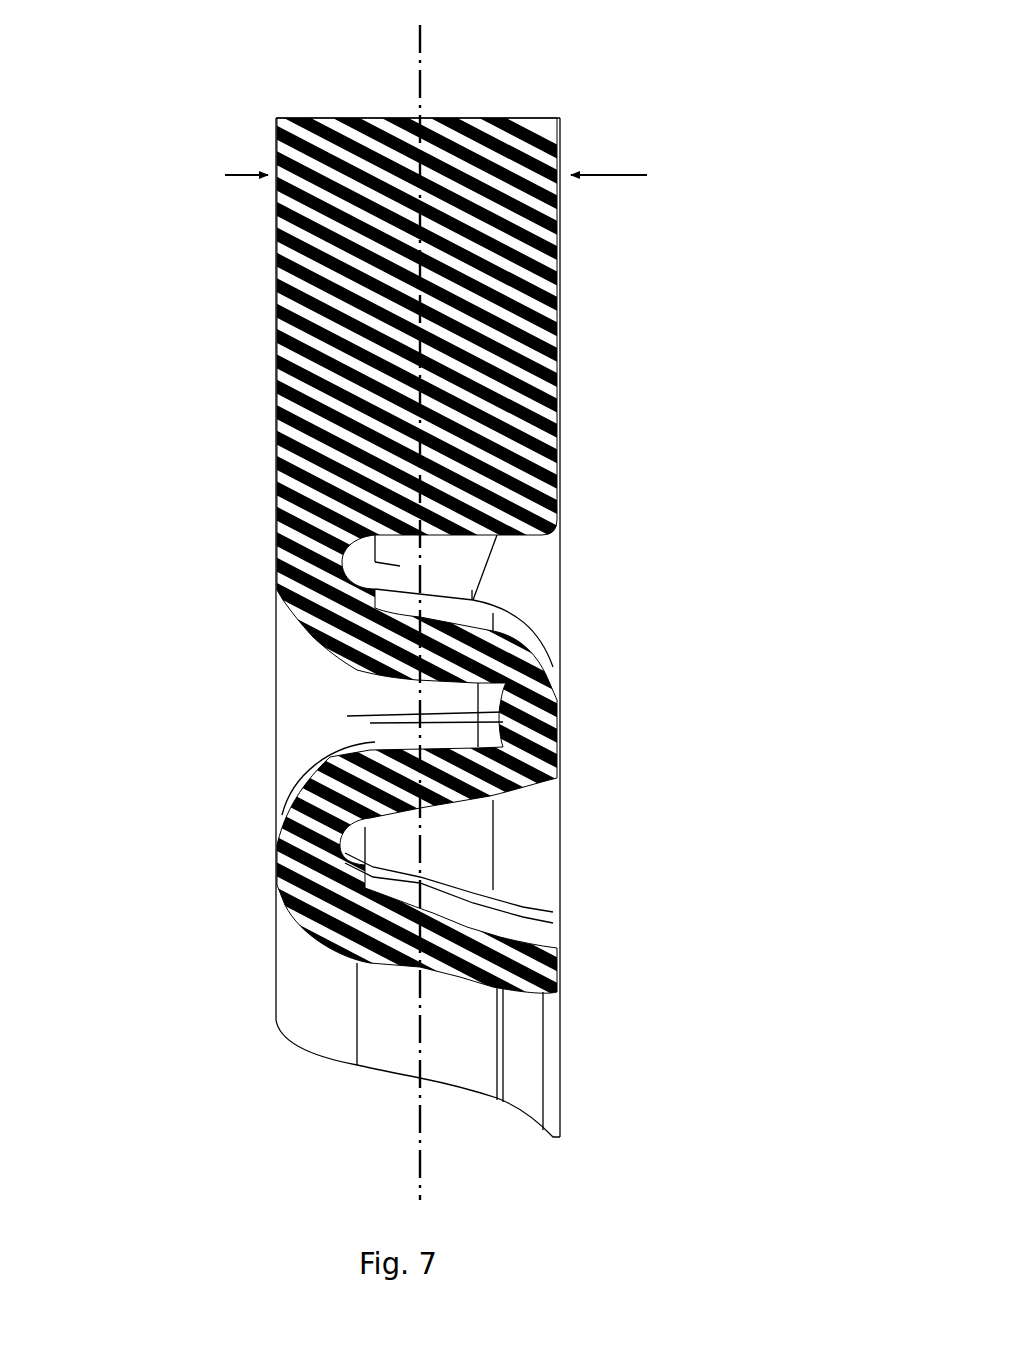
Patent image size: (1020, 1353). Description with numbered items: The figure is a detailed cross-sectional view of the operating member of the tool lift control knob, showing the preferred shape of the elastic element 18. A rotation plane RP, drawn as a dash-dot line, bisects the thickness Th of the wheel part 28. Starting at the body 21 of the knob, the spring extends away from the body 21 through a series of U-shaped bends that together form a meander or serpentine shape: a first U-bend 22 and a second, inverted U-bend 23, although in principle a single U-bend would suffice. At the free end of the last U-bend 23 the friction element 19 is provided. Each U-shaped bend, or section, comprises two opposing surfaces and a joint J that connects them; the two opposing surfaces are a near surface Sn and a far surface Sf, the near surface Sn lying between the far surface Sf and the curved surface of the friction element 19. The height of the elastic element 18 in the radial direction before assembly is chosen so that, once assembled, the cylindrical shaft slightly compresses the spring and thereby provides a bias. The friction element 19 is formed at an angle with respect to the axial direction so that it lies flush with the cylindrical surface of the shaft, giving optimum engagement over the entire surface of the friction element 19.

The body 21 is at (566, 480).
The wheel part 28 is at (563, 335).
The elastic element 18 is at (270, 843).
The friction element 19 is at (537, 1044).
The first U-bend 22 is at (380, 677).
The second U-bend 23 is at (473, 928).
The thickness Th is at (453, 181).
The rotation plane RP is at (420, 80).
The joint J is at (557, 720).
The far surface Sf is at (410, 678).
The near surface Sn is at (373, 740).